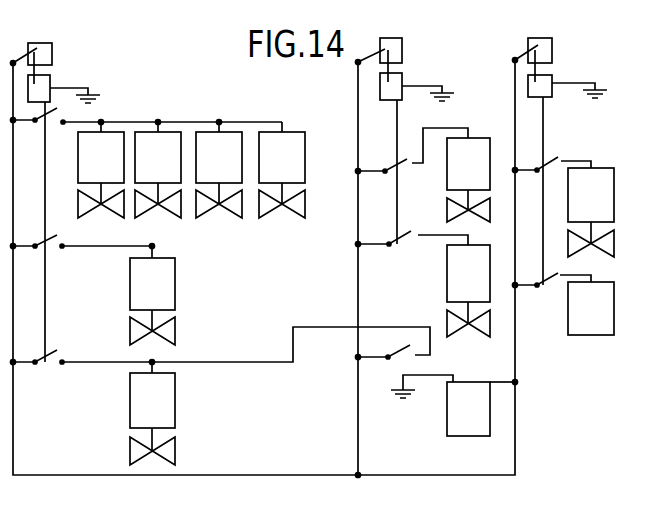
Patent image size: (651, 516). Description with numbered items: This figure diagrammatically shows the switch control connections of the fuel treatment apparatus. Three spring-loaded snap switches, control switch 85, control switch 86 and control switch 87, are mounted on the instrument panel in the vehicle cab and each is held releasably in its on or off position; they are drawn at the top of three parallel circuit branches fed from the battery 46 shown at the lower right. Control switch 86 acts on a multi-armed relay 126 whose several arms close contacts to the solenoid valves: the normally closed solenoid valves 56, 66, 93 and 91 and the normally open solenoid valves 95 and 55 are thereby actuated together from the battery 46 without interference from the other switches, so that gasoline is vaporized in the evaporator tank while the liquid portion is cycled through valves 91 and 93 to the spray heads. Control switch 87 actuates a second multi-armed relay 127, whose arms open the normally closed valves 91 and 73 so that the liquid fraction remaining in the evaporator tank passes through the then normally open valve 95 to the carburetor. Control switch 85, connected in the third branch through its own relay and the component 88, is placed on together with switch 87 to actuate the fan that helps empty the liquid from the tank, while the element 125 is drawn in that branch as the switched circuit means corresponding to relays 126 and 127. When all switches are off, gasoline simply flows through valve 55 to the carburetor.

The control switch 86 is at (52, 55).
The relay 126 is at (36, 82).
The control switch 87 is at (402, 50).
The relay 127 is at (402, 80).
The control switch 85 is at (552, 45).
The relay coil 125 is at (550, 95).
The normally closed solenoid valve 56 is at (101, 170).
The normally closed solenoid valve 66 is at (158, 170).
The normally closed solenoid valve 93 is at (219, 170).
The normally open solenoid valve 95 is at (282, 170).
The normally closed solenoid valve 91 is at (310, 241).
The normally open solenoid valve 55 is at (152, 419).
The normally closed valve 73 is at (530, 252).
The relay 88 is at (591, 308).
The battery 46 is at (454, 405).